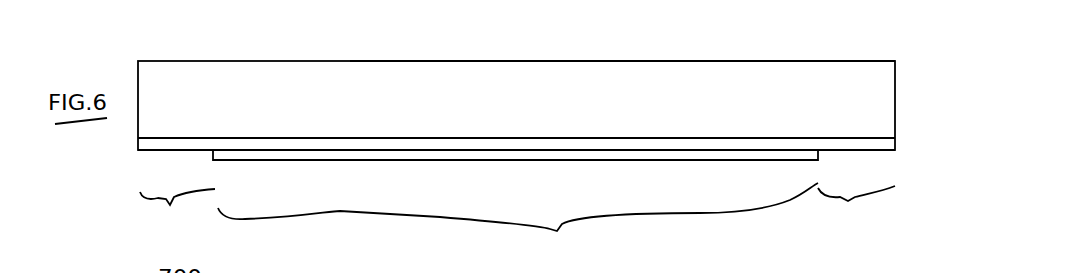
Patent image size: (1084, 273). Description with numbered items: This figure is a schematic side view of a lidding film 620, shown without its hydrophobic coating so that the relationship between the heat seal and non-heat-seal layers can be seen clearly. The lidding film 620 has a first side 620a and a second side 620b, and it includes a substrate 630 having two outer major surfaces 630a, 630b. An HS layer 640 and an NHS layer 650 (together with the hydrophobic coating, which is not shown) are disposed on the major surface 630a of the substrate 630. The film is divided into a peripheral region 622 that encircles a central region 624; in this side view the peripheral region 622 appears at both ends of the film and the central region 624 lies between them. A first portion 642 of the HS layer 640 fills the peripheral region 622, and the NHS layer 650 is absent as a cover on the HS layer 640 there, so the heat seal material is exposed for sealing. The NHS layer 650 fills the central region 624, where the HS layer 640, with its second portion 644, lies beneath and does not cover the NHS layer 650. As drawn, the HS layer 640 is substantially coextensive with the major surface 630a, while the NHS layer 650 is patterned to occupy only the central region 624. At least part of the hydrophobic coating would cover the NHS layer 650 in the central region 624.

The lidding film 620 is at (232, 28).
The first side of lidding film 620a is at (710, 175).
The second side of lidding film 620b is at (707, 38).
The peripheral region 622 is at (517, 213).
The central region 624 is at (518, 223).
The substrate 630 is at (332, 107).
The outer major surface of substrate 630a is at (432, 136).
The outer major surface of substrate 630b is at (436, 64).
The HS layer 640 is at (473, 146).
The first portion of HS layer 642 is at (170, 136).
The second portion of HS layer 644 is at (687, 137).
The NHS layer 650 is at (518, 158).